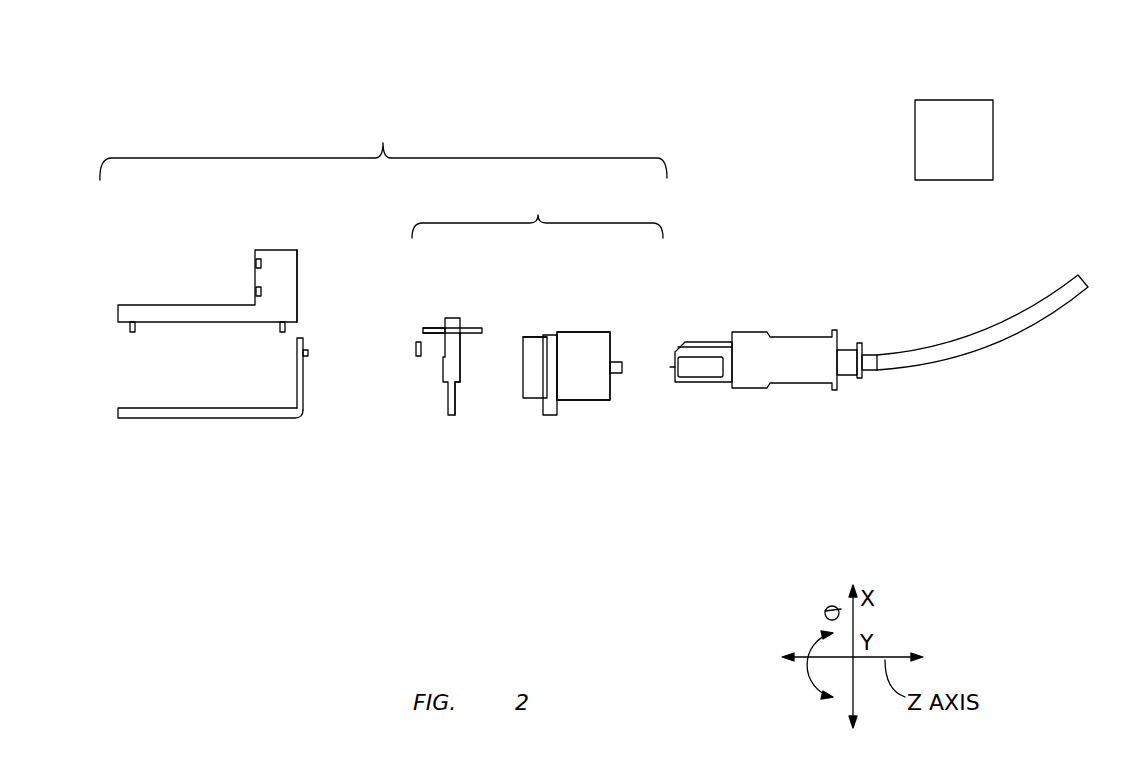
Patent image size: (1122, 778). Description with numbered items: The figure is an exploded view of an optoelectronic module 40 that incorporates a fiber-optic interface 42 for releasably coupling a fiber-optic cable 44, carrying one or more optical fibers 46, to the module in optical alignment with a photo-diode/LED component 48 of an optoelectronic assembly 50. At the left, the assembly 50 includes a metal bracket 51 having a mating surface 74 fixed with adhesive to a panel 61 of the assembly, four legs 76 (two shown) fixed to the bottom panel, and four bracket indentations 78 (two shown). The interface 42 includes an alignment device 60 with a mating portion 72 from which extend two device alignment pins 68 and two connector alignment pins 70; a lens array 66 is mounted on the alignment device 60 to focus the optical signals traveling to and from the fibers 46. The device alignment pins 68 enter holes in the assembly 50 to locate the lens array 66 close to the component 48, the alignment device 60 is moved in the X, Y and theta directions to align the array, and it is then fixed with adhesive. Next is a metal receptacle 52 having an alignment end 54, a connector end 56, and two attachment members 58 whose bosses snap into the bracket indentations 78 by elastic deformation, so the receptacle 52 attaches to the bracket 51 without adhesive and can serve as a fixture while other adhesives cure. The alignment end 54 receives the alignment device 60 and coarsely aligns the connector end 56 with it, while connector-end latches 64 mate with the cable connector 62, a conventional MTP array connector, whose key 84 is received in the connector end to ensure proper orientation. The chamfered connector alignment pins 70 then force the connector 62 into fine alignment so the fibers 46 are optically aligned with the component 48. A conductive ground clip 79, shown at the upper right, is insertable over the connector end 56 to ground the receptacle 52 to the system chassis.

The optoelectronic module 40 is at (383, 145).
The fiber-optic interface 42 is at (537, 209).
The fiber-optic cable 44 is at (992, 353).
The optical fiber 46 is at (672, 367).
The photo-diode/LED component 48 is at (308, 353).
The optoelectronic assembly 50 is at (238, 440).
The bracket 51 is at (273, 250).
The receptacle 52 is at (584, 300).
The alignment end 54 is at (540, 408).
The connector end 56 is at (578, 402).
The attachment member 58 is at (538, 337).
The alignment device 60 is at (450, 432).
The panel 61 is at (303, 375).
The cable connector 62 is at (804, 295).
The connector-end latch 64 is at (616, 362).
The lens array 66 is at (413, 347).
The device alignment pin 68 is at (435, 327).
The connector alignment pin 70 is at (472, 327).
The mating portion 72 is at (460, 370).
The mating surface 74 is at (297, 280).
The leg 76 is at (133, 334).
The bracket indentation 78 is at (256, 263).
The conductive ground clip 79 is at (945, 100).
The key 84 is at (707, 342).